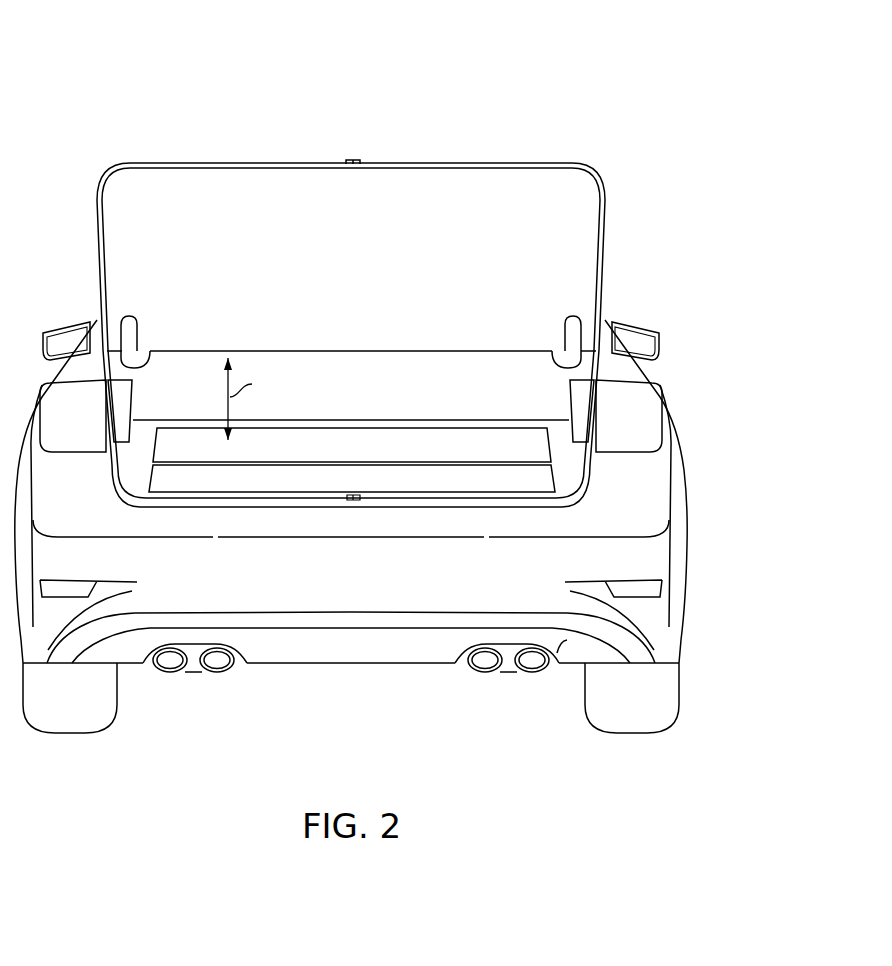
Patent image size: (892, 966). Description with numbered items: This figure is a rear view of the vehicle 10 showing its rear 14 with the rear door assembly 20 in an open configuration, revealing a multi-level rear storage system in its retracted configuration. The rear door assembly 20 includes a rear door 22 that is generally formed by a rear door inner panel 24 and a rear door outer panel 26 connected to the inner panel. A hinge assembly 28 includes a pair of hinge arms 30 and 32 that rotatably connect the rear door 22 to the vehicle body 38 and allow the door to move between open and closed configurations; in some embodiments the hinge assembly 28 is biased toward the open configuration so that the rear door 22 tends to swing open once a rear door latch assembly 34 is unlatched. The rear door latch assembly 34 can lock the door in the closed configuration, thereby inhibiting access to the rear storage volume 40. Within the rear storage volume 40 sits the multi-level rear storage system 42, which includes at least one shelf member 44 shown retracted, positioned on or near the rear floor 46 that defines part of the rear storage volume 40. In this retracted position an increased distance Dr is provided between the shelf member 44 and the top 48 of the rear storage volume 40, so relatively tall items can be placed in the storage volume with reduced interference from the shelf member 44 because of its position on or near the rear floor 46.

The vehicle 10 is at (597, 127).
The rear 14 is at (713, 293).
The rear door assembly 20 is at (607, 197).
The rear door 22 is at (247, 186).
The rear door inner panel 24 is at (313, 203).
The rear door outer panel 26 is at (97, 255).
The hinge assembly 28 is at (605, 311).
The hinge arm 30 is at (135, 330).
The hinge arm 32 is at (570, 320).
The rear door latch assembly 34 is at (355, 158).
The vehicle body 38 is at (650, 377).
The rear storage volume 40 is at (438, 389).
The multi-level rear storage system 42 is at (146, 475).
The shelf member 44 is at (323, 442).
The rear floor 46 is at (572, 486).
The top 48 is at (383, 358).